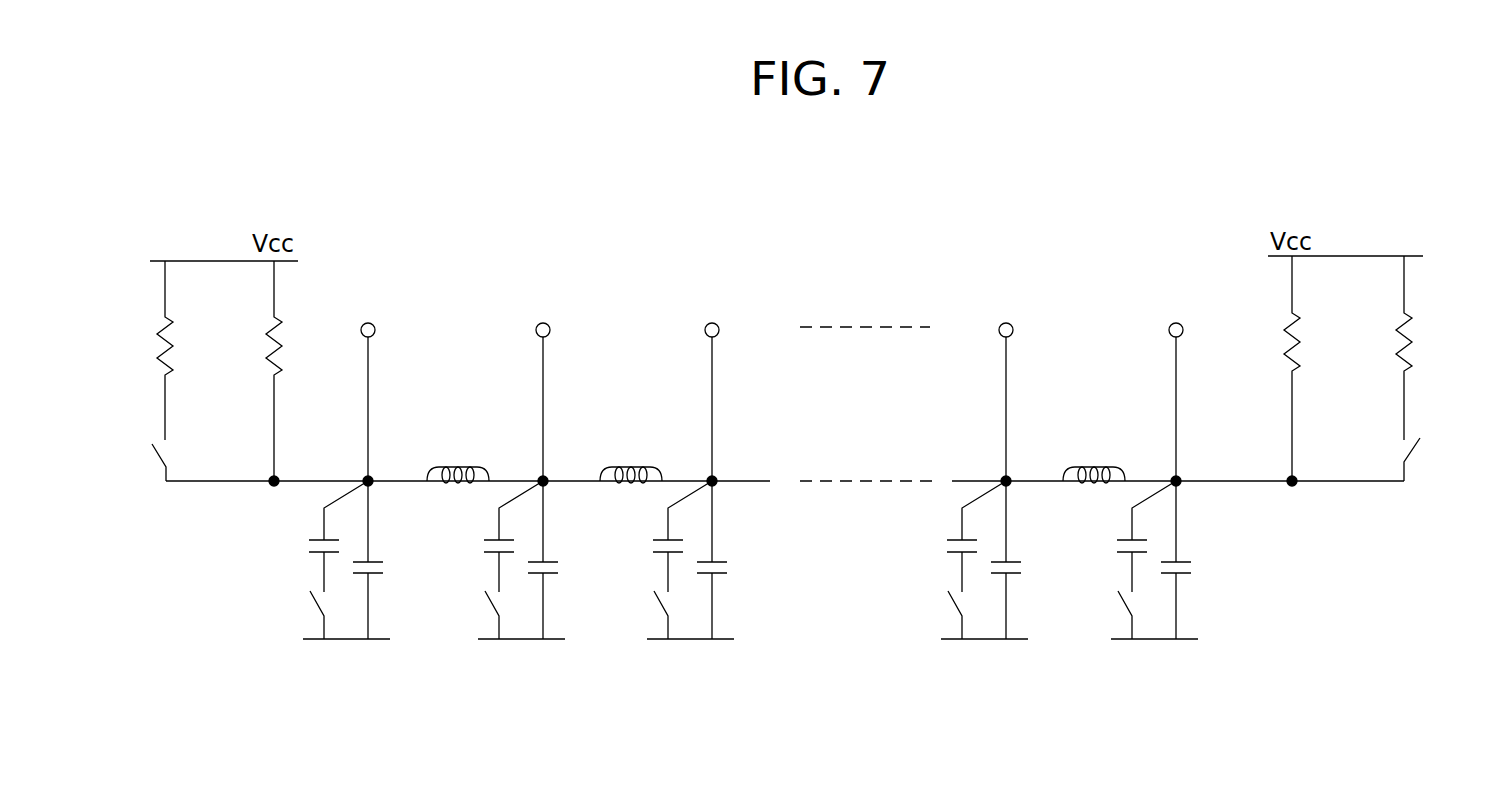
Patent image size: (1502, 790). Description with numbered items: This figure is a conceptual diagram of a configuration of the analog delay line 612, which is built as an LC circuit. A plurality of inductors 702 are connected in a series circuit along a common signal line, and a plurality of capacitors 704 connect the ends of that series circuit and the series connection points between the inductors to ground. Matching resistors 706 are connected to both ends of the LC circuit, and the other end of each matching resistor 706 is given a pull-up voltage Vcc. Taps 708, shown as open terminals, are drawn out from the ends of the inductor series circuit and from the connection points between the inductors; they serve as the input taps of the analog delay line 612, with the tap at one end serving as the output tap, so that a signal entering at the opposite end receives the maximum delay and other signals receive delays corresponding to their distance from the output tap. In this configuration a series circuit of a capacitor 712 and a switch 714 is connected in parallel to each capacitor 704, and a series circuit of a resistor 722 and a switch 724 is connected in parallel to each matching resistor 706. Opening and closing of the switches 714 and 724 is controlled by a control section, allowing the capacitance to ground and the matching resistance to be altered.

The analog delay line 612 is at (908, 238).
The inductor 702 is at (457, 465).
The capacitor 704 is at (384, 573).
The matching resistor 706 is at (282, 343).
The tap 708 is at (373, 324).
The capacitor 712 is at (305, 545).
The switch 714 is at (314, 610).
The resistor 722 is at (172, 363).
The switch 724 is at (163, 455).